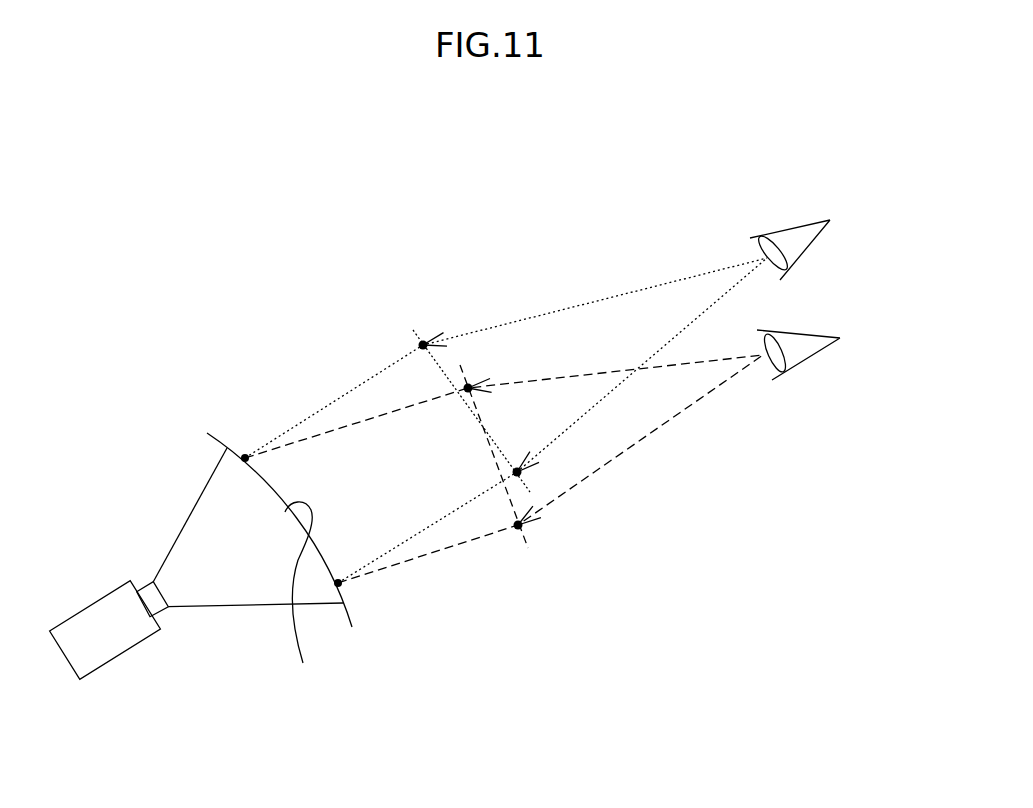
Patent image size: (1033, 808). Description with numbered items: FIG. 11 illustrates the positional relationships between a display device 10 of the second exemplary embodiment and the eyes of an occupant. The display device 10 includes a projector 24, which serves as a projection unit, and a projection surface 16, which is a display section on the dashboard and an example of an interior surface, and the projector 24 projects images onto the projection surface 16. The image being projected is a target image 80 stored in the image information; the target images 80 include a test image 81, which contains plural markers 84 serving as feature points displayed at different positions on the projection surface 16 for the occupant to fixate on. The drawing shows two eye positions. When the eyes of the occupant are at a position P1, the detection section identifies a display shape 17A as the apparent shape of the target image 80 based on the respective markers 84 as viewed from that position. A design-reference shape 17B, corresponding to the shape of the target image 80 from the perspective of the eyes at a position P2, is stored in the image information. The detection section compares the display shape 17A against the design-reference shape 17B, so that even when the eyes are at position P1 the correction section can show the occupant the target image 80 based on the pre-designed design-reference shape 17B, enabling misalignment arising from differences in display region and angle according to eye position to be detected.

The display device 10 is at (118, 410).
The projection surface 16 is at (227, 448).
The projector 24 is at (83, 653).
The target image 80 is at (319, 599).
The test image 81 is at (319, 599).
The marker 84 is at (245, 458).
The display shape 17A is at (447, 375).
The design-reference shape 17B is at (496, 515).
The position P1 is at (848, 220).
The position P2 is at (870, 323).